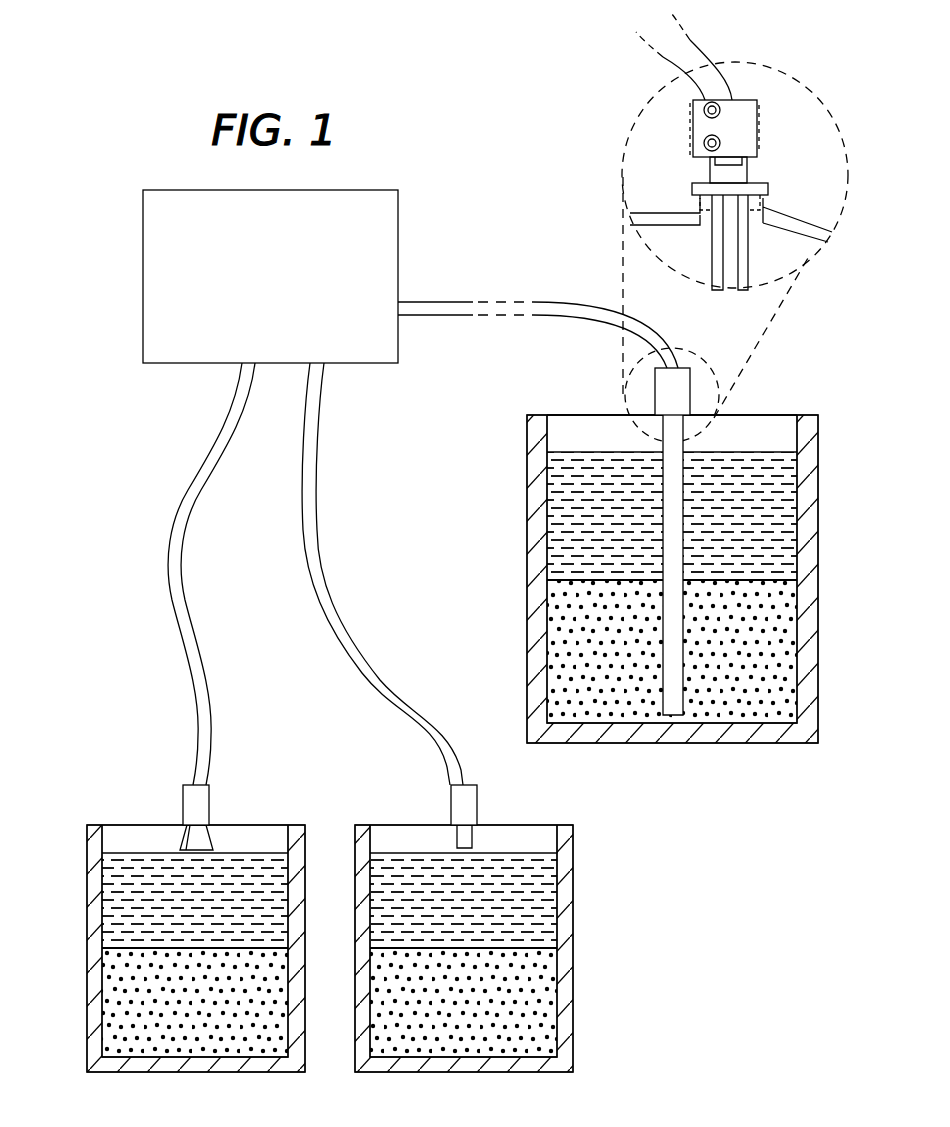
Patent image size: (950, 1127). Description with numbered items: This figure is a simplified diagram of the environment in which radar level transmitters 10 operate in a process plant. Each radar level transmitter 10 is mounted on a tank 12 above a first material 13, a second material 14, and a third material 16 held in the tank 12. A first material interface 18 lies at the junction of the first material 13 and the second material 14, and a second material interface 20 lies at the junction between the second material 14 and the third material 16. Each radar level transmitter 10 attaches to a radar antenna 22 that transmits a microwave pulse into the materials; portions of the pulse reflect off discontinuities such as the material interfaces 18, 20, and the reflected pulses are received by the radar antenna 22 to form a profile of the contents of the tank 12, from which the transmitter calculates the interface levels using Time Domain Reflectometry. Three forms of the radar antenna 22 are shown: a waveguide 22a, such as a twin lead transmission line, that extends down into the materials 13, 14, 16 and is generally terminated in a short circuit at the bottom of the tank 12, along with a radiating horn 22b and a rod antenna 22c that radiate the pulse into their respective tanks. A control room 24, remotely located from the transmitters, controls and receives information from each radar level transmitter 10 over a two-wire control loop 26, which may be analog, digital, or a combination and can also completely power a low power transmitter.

The radar level transmitter 10 is at (693, 148).
The tank 12 is at (527, 543).
The first material 13 is at (788, 413).
The second material 14 is at (562, 500).
The third material 16 is at (558, 694).
The first material interface 18 is at (563, 452).
The second material interface 20 is at (570, 580).
The radar antenna 22 is at (660, 638).
The waveguide 22a is at (718, 262).
The radiating horn 22b is at (213, 843).
The rod antenna 22c is at (480, 840).
The control room 24 is at (213, 363).
The 2-wire control loop 26 is at (452, 316).